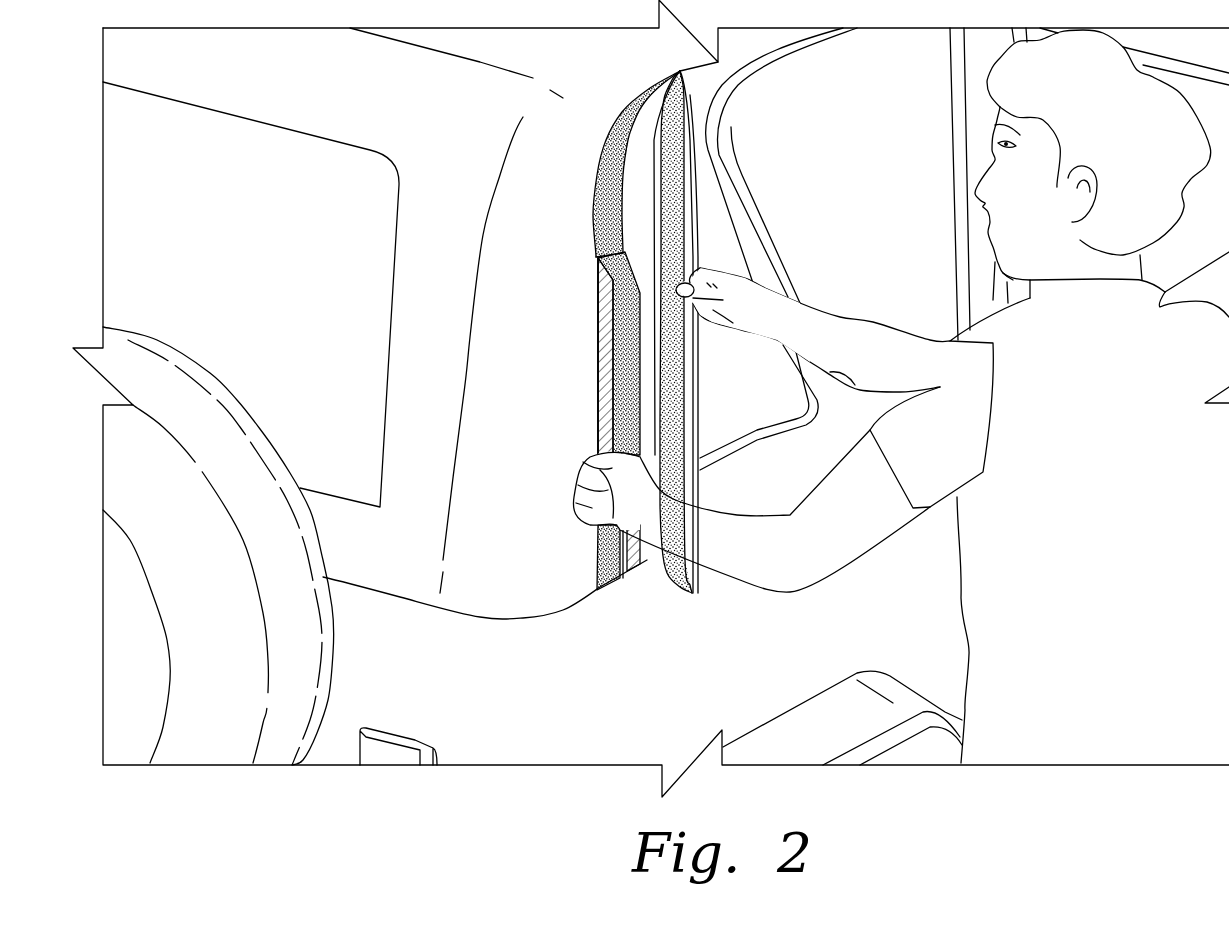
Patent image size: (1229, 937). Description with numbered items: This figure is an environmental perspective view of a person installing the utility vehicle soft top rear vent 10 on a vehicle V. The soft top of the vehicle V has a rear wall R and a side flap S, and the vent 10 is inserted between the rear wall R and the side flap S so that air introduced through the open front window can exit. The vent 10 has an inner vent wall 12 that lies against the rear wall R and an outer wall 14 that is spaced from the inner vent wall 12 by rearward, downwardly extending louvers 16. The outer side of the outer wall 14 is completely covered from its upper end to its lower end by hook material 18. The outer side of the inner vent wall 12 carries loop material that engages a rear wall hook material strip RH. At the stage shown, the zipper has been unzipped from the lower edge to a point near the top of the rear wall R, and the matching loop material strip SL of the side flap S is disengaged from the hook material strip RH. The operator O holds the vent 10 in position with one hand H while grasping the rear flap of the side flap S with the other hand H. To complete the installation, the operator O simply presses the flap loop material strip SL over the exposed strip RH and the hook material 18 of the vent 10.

The utility vehicle soft top rear vent 10 is at (536, 410).
The inner vent wall 12 is at (599, 360).
The outer wall 14 is at (601, 316).
The louvers 16 is at (600, 407).
The hook material 18 is at (627, 272).
The rear wall hook material strip RH is at (606, 157).
The loop material strip SL is at (683, 185).
The side flap S is at (864, 127).
The rear wall R is at (540, 244).
The hand H is at (763, 321).
The operator O is at (901, 396).
The vehicle V is at (815, 658).